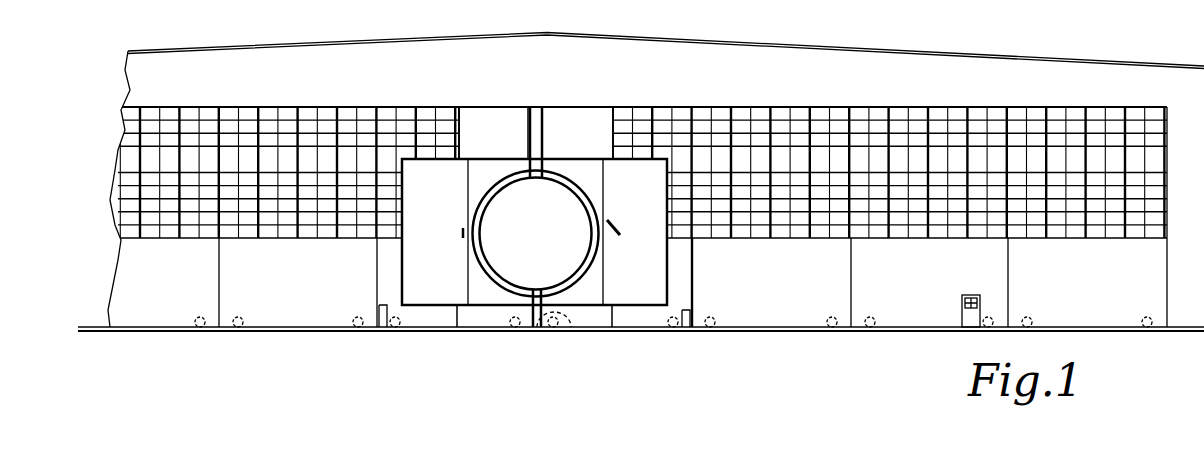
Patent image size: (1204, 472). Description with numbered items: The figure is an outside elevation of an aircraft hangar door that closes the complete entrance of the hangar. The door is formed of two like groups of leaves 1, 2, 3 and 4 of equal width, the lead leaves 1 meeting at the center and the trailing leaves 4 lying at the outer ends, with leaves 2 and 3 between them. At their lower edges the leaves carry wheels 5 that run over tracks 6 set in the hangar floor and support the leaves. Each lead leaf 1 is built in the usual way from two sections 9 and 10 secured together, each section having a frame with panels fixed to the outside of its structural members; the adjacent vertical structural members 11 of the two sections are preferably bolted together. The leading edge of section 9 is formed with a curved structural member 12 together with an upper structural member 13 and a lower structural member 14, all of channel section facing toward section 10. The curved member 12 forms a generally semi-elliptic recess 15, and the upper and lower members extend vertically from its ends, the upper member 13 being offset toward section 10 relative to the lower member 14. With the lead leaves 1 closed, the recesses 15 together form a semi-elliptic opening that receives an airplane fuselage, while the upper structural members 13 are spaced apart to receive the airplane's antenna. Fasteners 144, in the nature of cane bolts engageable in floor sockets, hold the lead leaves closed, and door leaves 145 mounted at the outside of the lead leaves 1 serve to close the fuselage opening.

The lead leaf 1 is at (428, 320).
The leaf 2 is at (322, 286).
The leaf 3 is at (172, 280).
The trailing leaf 4 is at (1130, 272).
The wheels 5 is at (199, 317).
The tracks 6 is at (84, 326).
The section 9 is at (491, 112).
The section 10 is at (432, 108).
The vertical structural members 11 is at (459, 112).
The curved structural member 12 is at (499, 178).
The upper structural member 13 is at (528, 134).
The lower structural member 14 is at (521, 327).
The semi-elliptic recess 15 is at (524, 224).
The fasteners 144 is at (378, 303).
The door leaves 145 is at (407, 268).